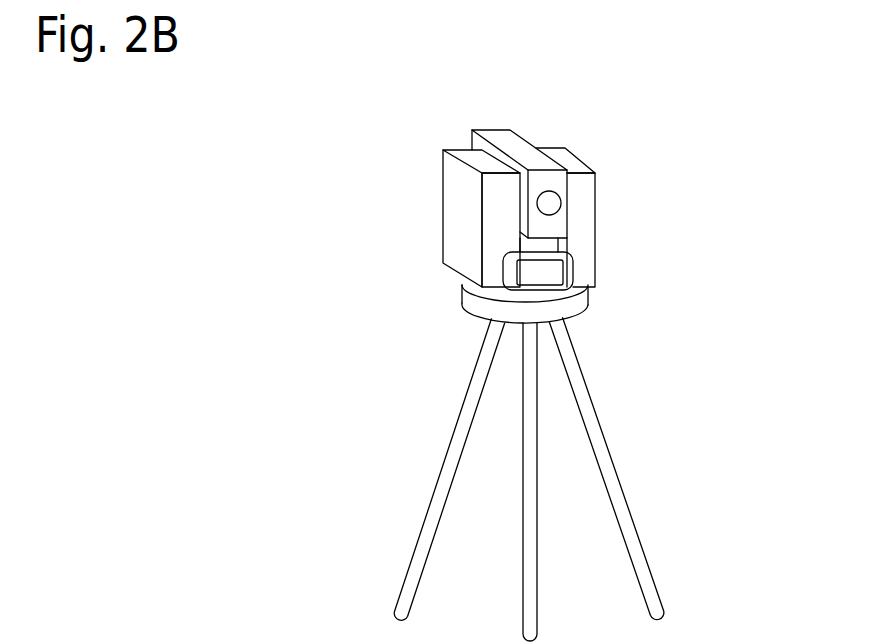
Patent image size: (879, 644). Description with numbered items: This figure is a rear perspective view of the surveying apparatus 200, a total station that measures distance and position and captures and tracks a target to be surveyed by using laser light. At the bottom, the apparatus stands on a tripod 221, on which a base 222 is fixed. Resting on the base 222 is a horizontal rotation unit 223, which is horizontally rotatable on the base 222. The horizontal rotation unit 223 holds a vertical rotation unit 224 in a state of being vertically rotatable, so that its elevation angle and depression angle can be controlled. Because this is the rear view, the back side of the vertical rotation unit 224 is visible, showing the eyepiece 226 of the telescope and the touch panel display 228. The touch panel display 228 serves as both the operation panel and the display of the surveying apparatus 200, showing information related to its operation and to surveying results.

The surveying apparatus 200 is at (577, 140).
The tripod 221 is at (608, 473).
The base 222 is at (573, 307).
The horizontal rotation unit 223 is at (453, 232).
The vertical rotation unit 224 is at (470, 139).
The eyepiece 226 is at (553, 205).
The touch panel display 228 is at (553, 268).